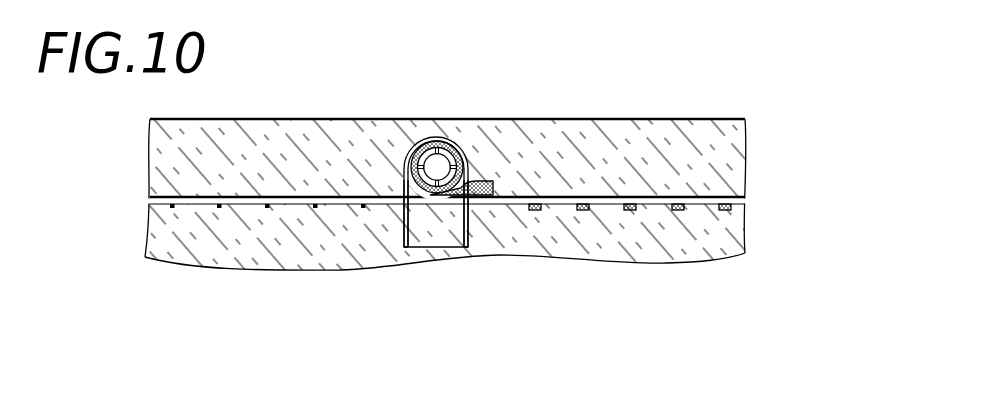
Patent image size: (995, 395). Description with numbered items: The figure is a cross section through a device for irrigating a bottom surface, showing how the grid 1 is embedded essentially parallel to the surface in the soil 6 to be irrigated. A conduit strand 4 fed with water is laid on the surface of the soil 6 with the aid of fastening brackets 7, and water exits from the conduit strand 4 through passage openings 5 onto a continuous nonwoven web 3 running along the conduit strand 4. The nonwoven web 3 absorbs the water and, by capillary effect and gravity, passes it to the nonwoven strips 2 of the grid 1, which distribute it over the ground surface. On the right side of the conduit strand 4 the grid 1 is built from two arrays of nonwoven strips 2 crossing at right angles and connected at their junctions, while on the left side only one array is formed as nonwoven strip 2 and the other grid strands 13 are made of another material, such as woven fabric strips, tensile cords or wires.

The grid 1 is at (328, 180).
The nonwoven strips 2 is at (287, 196).
The nonwoven web 3 is at (453, 195).
The conduit strand 4 is at (423, 138).
The passage openings 5 is at (430, 165).
The soil 6 is at (188, 230).
The fastening brackets 7 is at (405, 225).
The other grid strands 13 is at (267, 208).